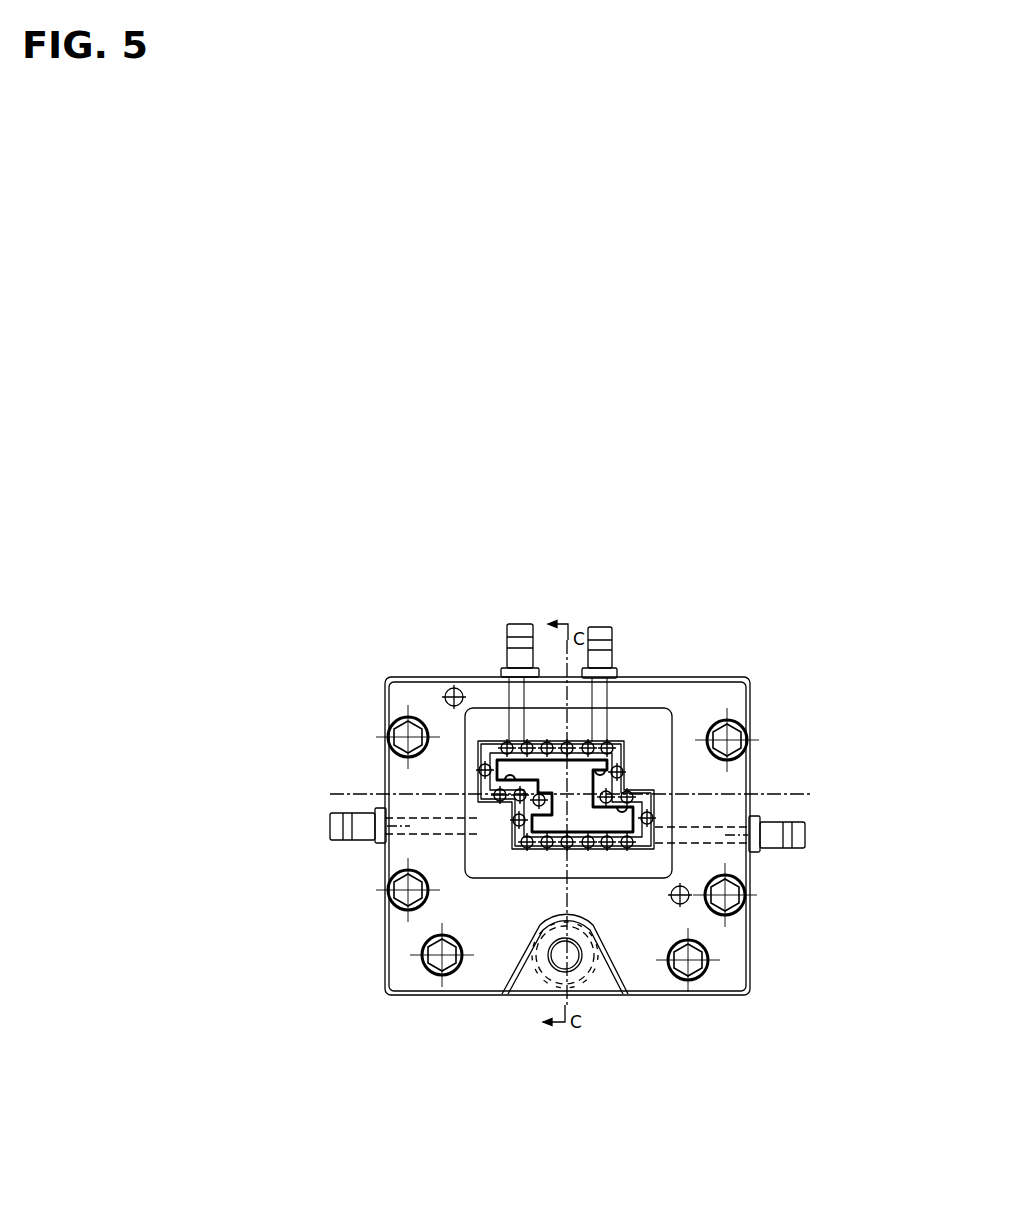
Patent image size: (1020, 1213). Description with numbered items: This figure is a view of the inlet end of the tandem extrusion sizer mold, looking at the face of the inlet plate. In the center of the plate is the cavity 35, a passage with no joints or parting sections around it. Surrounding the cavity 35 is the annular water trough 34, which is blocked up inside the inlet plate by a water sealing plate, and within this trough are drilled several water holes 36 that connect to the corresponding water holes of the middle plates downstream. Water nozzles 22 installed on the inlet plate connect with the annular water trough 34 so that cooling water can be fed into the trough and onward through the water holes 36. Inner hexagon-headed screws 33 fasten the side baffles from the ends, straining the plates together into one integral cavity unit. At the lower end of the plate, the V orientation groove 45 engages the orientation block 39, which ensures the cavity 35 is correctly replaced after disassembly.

The water nozzle 22 is at (519, 700).
The inner hexagon-headed screw 33 is at (399, 718).
The annular water trough 34 is at (630, 752).
The cavity 35 is at (578, 785).
The water hole 36 is at (621, 770).
The orientation block 39 is at (549, 919).
The V orientation groove 45 is at (627, 994).